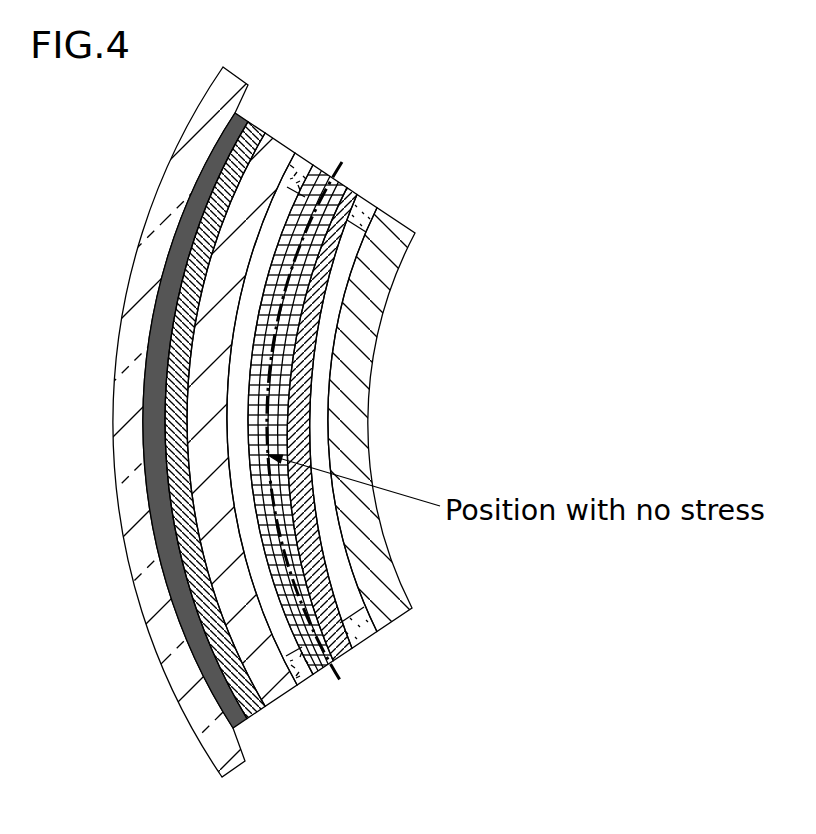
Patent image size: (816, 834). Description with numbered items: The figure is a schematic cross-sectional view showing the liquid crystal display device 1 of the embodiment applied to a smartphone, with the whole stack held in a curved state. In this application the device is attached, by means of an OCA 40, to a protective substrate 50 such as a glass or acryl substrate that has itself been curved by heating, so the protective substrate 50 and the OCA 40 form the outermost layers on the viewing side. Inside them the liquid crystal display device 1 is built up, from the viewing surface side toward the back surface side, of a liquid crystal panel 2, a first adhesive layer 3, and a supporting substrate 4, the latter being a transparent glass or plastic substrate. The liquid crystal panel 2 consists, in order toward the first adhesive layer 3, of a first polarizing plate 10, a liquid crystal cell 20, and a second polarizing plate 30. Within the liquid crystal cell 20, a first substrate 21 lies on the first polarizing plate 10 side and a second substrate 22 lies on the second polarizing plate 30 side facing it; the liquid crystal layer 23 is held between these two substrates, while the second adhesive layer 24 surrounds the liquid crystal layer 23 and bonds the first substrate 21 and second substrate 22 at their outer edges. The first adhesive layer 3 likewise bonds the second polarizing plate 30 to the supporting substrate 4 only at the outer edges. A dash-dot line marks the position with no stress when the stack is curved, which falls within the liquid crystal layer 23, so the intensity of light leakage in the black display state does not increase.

The liquid crystal display device 1 is at (436, 191).
The liquid crystal panel 2 is at (420, 691).
The first adhesive layer 3 is at (413, 245).
The supporting substrate 4 is at (349, 379).
The first polarizing plate 10 is at (258, 722).
The liquid crystal cell 20 is at (355, 662).
The first substrate 21 is at (275, 152).
The second substrate 22 is at (357, 198).
The liquid crystal layer 23 is at (332, 176).
The second adhesive layer 24 is at (285, 213).
The second polarizing plate 30 is at (360, 646).
The OCA 40 is at (158, 350).
The protective substrate 50 is at (124, 479).